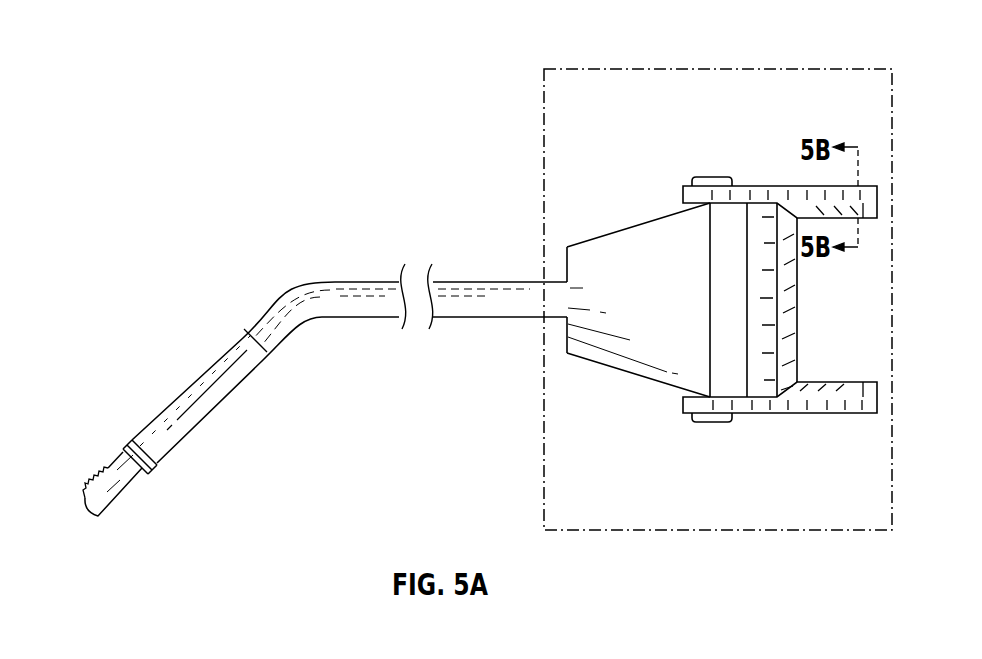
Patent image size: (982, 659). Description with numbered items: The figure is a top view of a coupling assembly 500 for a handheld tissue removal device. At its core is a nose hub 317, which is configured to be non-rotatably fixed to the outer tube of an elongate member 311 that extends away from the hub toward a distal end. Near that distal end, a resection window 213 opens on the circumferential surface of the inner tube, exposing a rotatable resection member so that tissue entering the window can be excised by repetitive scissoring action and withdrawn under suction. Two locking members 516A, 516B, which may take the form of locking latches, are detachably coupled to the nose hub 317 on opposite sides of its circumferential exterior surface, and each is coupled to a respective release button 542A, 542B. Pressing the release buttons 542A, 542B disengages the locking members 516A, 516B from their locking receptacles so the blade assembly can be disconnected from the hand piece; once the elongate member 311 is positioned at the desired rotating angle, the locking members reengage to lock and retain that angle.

The coupling assembly 500 is at (612, 68).
The locking member 516A is at (773, 186).
The locking member 516B is at (797, 413).
The release button 542A is at (712, 177).
The release button 542B is at (710, 422).
The nose hub 317 is at (625, 365).
The elongate member 311 is at (503, 318).
The resection window 213 is at (103, 487).